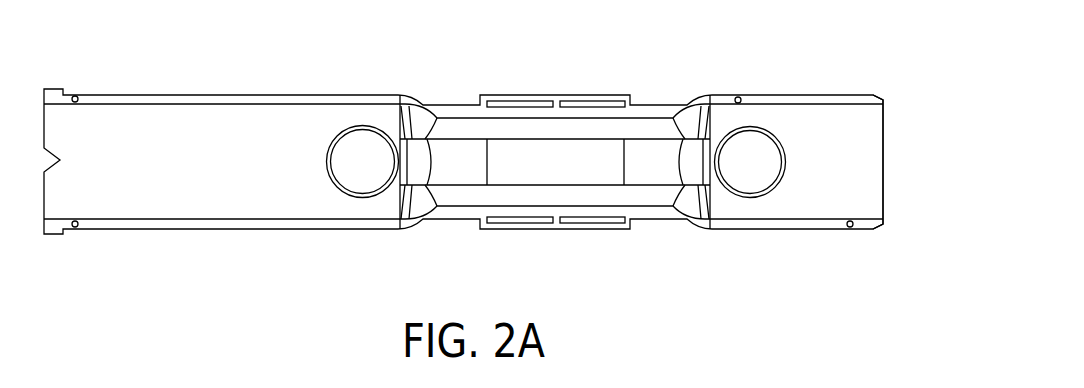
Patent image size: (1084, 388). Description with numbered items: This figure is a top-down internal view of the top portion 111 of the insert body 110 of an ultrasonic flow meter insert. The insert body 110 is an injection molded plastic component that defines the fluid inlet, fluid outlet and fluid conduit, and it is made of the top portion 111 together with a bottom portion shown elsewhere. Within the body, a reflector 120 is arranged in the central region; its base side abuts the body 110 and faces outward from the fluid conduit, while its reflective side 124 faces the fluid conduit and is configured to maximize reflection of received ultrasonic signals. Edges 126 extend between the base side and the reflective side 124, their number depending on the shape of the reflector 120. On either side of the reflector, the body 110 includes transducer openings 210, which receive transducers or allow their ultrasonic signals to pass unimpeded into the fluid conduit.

The insert body 110 is at (385, 94).
The top portion 111 is at (883, 110).
The reflector 120 is at (612, 153).
The reflective side 124 is at (580, 170).
The edges 126 is at (488, 161).
The transducer openings 210 is at (390, 173).